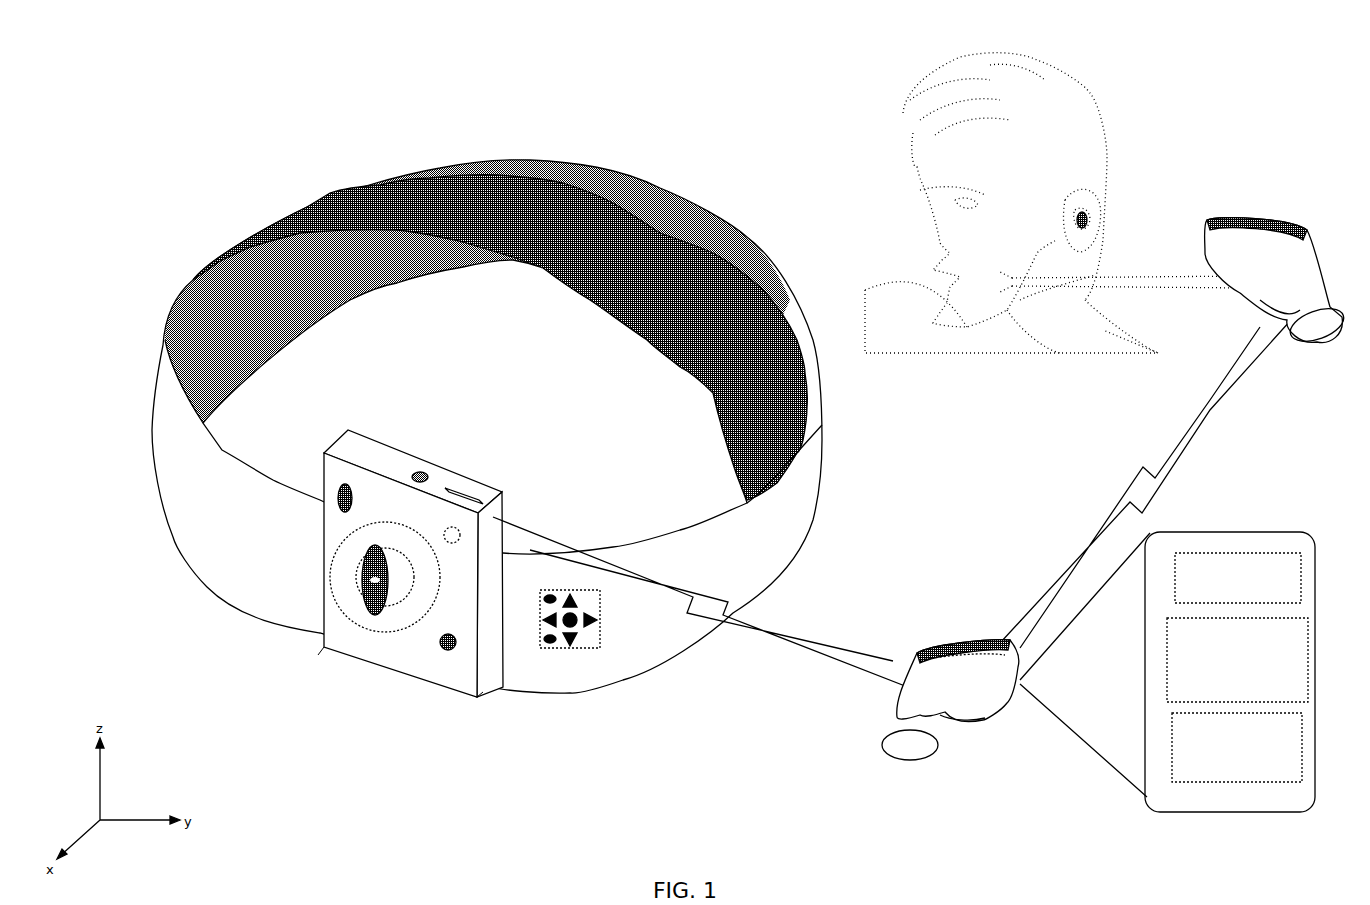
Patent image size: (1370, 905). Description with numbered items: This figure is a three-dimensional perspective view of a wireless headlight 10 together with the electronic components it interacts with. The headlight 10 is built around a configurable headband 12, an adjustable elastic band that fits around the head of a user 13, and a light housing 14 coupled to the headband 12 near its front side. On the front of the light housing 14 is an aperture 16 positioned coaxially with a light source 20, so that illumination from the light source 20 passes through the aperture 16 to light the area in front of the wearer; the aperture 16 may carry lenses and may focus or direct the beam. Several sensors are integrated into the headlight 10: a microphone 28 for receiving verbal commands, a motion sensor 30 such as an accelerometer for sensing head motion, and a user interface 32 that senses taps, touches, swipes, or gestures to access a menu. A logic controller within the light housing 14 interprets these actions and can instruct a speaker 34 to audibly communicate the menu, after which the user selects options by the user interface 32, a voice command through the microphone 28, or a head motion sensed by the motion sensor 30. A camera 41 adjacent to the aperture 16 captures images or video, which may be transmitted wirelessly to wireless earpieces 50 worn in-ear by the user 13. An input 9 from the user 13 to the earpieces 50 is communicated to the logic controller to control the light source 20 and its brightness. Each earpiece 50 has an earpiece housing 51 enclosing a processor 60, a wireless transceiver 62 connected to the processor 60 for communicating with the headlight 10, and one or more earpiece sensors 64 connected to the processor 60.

The wireless headlight 10 is at (172, 146).
The headband 12 is at (640, 198).
The user 13 is at (933, 167).
The input 9 is at (1110, 340).
The light housing 14 is at (407, 658).
The aperture 16 is at (372, 617).
The light source 20 is at (362, 590).
The microphone 28 is at (345, 485).
The motion sensor 30 is at (420, 472).
The camera 41 is at (453, 527).
The user interface 32 is at (596, 640).
The speaker 34 is at (448, 645).
The wireless earpieces 50 is at (1075, 232).
The earpiece housing 51 is at (932, 670).
The processor 60 is at (1238, 578).
The wireless transceiver 62 is at (1237, 660).
The earpiece sensors 64 is at (1237, 747).